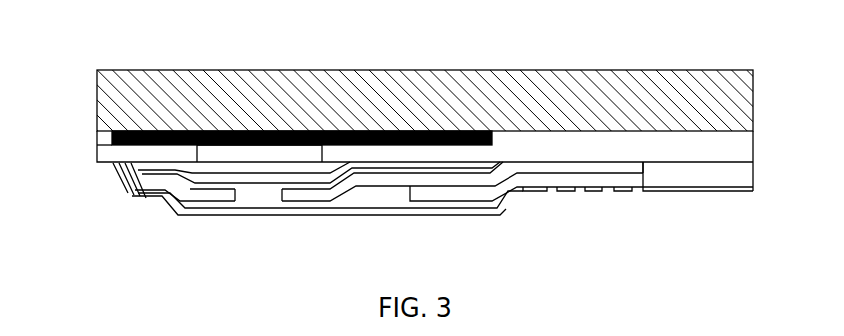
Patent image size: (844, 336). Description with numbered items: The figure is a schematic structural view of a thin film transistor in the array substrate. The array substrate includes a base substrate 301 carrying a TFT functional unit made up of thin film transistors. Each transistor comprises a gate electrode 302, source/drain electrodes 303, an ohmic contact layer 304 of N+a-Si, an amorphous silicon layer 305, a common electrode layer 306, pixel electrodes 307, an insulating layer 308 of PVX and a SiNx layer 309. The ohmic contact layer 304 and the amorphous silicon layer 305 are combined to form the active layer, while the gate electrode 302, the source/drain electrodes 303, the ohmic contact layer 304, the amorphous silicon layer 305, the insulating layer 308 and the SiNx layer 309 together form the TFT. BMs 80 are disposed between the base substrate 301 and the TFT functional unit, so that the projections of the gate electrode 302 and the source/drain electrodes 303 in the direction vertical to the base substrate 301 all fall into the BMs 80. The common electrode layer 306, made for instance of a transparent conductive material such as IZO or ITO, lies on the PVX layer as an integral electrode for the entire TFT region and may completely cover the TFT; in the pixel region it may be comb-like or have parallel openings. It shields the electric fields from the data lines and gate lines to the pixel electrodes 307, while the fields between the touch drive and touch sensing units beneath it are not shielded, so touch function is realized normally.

The BM 80 is at (494, 139).
The base substrate 301 is at (142, 125).
The gate electrode 302 is at (213, 157).
The source/drain electrodes 303 is at (290, 195).
The ohmic contact layer 304 is at (142, 173).
The amorphous silicon layer 305 is at (133, 166).
The common electrode layer 306 is at (505, 208).
The pixel electrodes 307 is at (623, 171).
The insulating layer 308 is at (718, 172).
The SiNx layer 309 is at (733, 145).